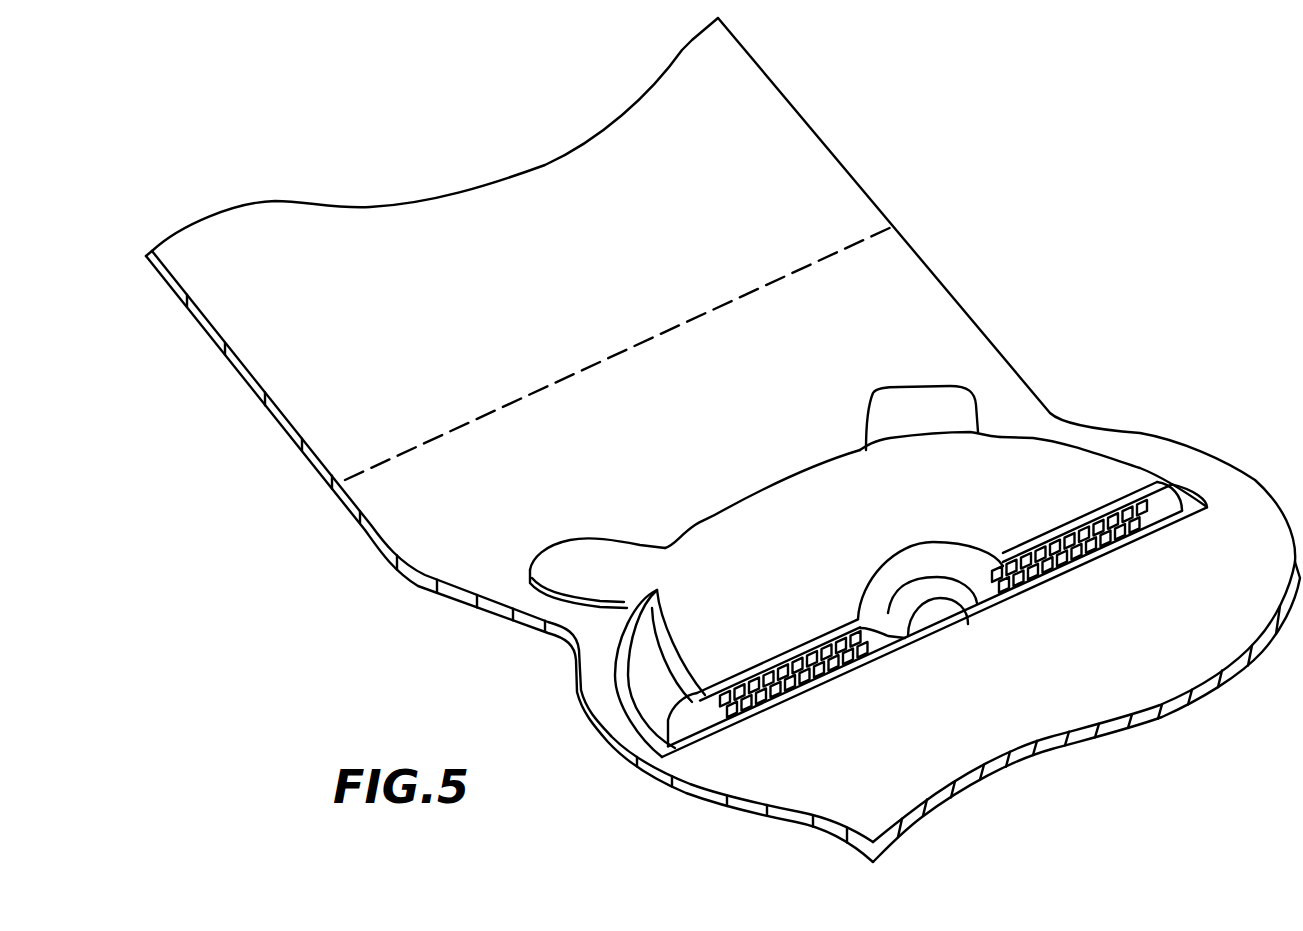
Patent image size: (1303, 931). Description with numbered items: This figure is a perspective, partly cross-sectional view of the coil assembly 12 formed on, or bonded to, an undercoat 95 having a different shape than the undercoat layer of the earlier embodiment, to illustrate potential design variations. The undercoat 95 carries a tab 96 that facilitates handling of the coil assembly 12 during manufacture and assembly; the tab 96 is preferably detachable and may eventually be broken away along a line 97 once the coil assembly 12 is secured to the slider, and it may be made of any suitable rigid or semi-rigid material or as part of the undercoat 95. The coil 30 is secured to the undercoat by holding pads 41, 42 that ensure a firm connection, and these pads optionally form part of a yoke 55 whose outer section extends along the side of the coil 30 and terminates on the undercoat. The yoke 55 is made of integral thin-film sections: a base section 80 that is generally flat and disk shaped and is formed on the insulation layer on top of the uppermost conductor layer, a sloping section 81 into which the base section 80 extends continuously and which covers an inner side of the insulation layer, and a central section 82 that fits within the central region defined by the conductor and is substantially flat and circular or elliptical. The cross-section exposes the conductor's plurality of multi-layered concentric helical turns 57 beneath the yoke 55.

The coil assembly 12 is at (723, 440).
The tab 96 is at (487, 218).
The line 97 is at (626, 350).
The coil 30 is at (866, 550).
The yoke 55 is at (866, 551).
The holding pad 41 is at (912, 402).
The holding pad 42 is at (562, 555).
The base section 80 is at (725, 535).
The sloping section 81 is at (950, 550).
The central section 82 is at (933, 612).
The turns 57 is at (820, 684).
The undercoat 95 is at (975, 760).